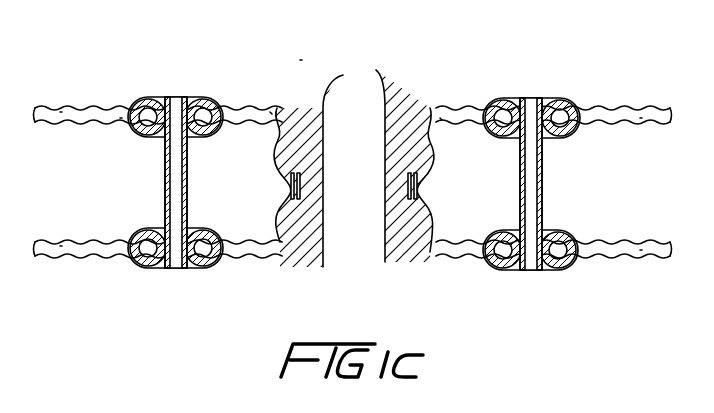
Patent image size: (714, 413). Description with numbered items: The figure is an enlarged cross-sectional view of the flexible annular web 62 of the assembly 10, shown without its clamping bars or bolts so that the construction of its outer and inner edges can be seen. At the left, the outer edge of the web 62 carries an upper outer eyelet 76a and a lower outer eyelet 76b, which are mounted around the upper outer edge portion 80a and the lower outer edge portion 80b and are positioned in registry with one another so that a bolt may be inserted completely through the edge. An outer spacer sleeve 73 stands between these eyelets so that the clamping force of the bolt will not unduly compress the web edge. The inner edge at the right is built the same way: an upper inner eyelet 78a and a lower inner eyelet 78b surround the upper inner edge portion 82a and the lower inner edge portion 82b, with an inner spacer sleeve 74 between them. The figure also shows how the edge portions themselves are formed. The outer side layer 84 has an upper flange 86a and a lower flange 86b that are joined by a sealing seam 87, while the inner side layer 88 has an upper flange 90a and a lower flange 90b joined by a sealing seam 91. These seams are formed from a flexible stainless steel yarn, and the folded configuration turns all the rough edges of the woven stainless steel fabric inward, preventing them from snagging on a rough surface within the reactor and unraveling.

The spinal fixation assembly 10 is at (305, 82).
The annular web 62 is at (354, 165).
The outer spacer sleeve 73 is at (165, 173).
The inner spacer sleeve 74 is at (542, 205).
The upper outer eyelet 76a is at (140, 96).
The lower outer eyelet 76b is at (191, 270).
The upper inner eyelet 78a is at (548, 98).
The lower inner eyelet 78b is at (545, 272).
The upper outer edge portion 80a is at (101, 70).
The lower outer edge portion 80b is at (103, 258).
The upper inner edge portion 82a is at (605, 108).
The lower inner edge portion 82b is at (618, 258).
The outer side layer 84 is at (275, 124).
The upper flange 86a is at (92, 124).
The lower flange 86b is at (92, 240).
The sealing seam 87 is at (290, 190).
The inner side layer 88 is at (450, 123).
The upper flange 90a is at (635, 125).
The lower flange 90b is at (624, 244).
The sealing seam 91 is at (420, 188).